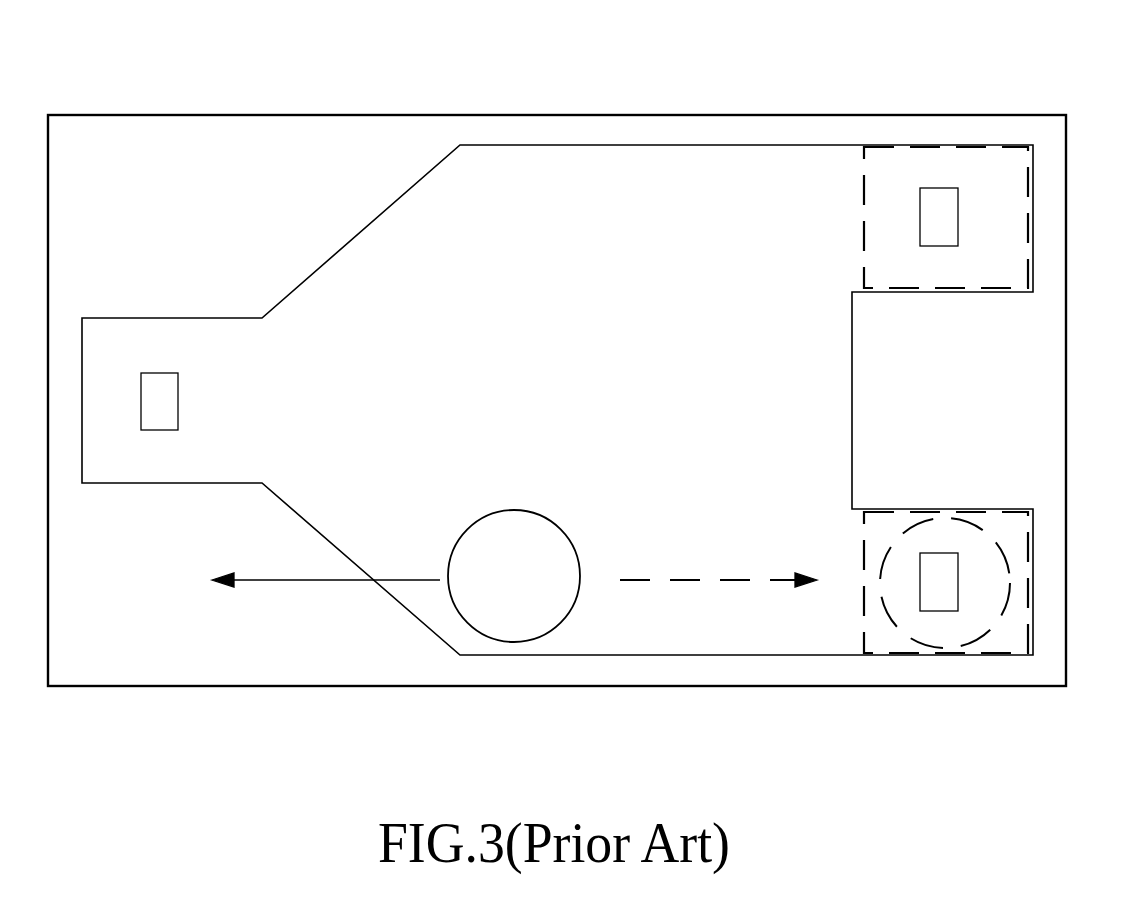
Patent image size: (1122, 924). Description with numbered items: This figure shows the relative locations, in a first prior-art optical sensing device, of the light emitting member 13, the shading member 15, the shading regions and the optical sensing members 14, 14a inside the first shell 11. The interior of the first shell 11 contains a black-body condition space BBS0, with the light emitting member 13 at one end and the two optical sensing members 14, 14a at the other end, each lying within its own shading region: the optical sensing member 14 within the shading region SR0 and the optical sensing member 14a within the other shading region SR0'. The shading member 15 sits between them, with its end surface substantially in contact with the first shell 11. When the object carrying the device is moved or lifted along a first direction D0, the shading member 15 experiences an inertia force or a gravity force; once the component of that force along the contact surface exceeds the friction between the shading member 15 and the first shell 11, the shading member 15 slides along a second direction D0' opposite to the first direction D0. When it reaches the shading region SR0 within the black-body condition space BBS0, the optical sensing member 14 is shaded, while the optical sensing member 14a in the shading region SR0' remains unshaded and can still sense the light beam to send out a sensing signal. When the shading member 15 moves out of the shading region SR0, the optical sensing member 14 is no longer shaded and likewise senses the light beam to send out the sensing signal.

The first shell 11 is at (1017, 131).
The light emitting member 13 is at (150, 392).
The optical sensing member 14 is at (940, 585).
The optical sensing member 14a is at (937, 220).
The shading member 15 is at (494, 551).
The black-body condition space BBS0 is at (582, 214).
The shading region SR0 is at (931, 649).
The shading region SR0' is at (915, 156).
The first direction D0 is at (326, 565).
The second direction D0' is at (718, 562).